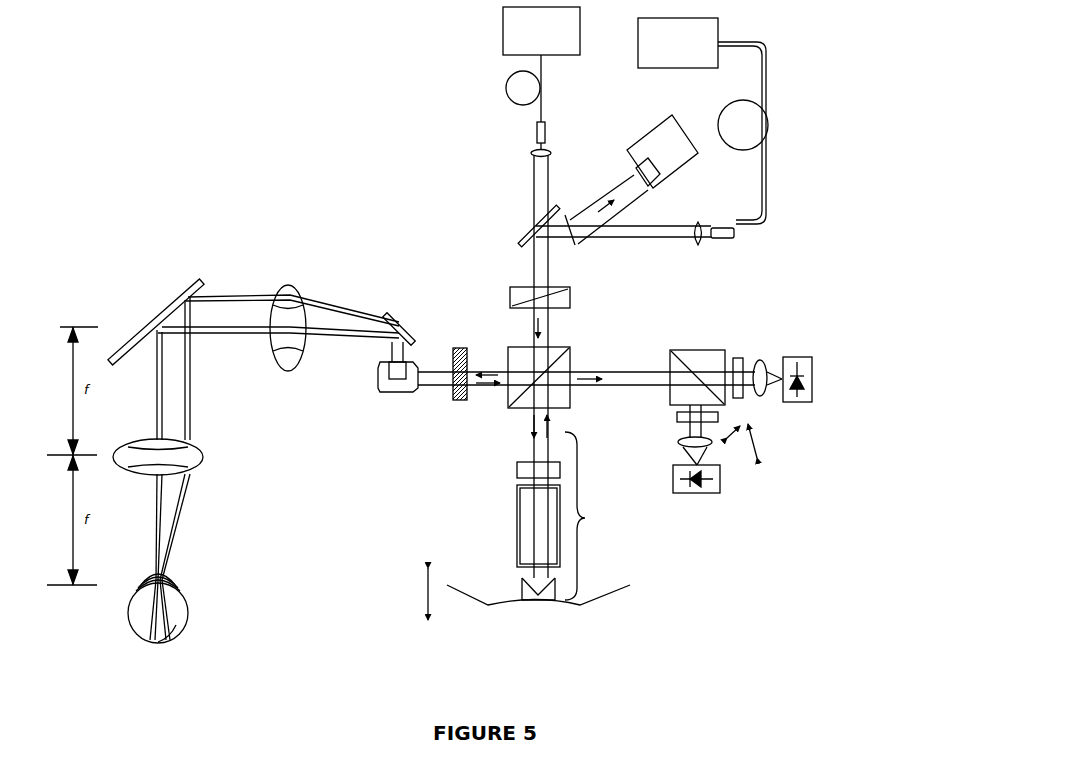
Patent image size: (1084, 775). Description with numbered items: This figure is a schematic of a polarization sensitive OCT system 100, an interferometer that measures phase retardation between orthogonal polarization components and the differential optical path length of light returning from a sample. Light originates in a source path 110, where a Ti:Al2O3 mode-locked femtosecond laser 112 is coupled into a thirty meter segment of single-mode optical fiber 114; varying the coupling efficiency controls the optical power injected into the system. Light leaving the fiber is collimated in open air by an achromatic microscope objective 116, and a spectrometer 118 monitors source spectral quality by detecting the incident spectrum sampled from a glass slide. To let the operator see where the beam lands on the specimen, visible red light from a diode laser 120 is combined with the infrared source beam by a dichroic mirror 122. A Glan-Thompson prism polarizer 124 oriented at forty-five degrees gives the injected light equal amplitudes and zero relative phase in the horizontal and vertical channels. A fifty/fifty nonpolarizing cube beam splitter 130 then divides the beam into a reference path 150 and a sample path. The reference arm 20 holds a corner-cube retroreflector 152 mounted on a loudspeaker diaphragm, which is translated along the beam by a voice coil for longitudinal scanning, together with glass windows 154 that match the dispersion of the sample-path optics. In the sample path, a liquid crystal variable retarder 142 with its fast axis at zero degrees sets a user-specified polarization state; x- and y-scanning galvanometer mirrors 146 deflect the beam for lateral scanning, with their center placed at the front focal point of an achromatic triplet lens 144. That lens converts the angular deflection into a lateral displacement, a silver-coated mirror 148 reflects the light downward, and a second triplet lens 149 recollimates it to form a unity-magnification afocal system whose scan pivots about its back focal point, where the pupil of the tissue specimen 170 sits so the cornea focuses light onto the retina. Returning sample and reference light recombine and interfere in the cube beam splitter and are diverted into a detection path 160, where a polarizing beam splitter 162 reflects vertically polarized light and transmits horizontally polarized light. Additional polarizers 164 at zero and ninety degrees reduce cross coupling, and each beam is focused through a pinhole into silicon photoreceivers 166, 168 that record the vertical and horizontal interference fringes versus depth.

The polarization sensitive OCT system 100 is at (260, 40).
The source path 110 is at (528, 258).
The Ti:Al2O3 mode-locked femtosecond laser 112 is at (715, 25).
The single-mode optical fiber 114 is at (770, 128).
The achromatic microscope objective 116 is at (743, 228).
The spectrometer 118 is at (677, 111).
The diode laser 120 is at (501, 28).
The dichroic mirror 122 is at (533, 225).
The Glan-Thompson prism polarizer 124 is at (574, 297).
The nonpolarizing broadband cube beam splitter 130 is at (572, 363).
The liquid crystal variable retarder 142 is at (449, 398).
The achromatic triplet lens 144 is at (277, 292).
The x- and y-scanning galvanometer mirrors 146 is at (366, 380).
The silver-coated mirror 148 is at (160, 292).
The second achromatic triplet lens 149 is at (181, 468).
The reference path 150 is at (528, 449).
The corner-cube retroreflector 152 is at (606, 600).
The glass windows 154 is at (514, 552).
The detection path 160 is at (622, 389).
The polarizing beam splitter 162 is at (709, 348).
The additional polarizers 164 is at (766, 453).
The silicon photoreceiver 166 is at (723, 485).
The silicon photoreceiver 168 is at (813, 403).
The tissue specimen 170 is at (179, 601).
The reference arm 20 is at (588, 516).